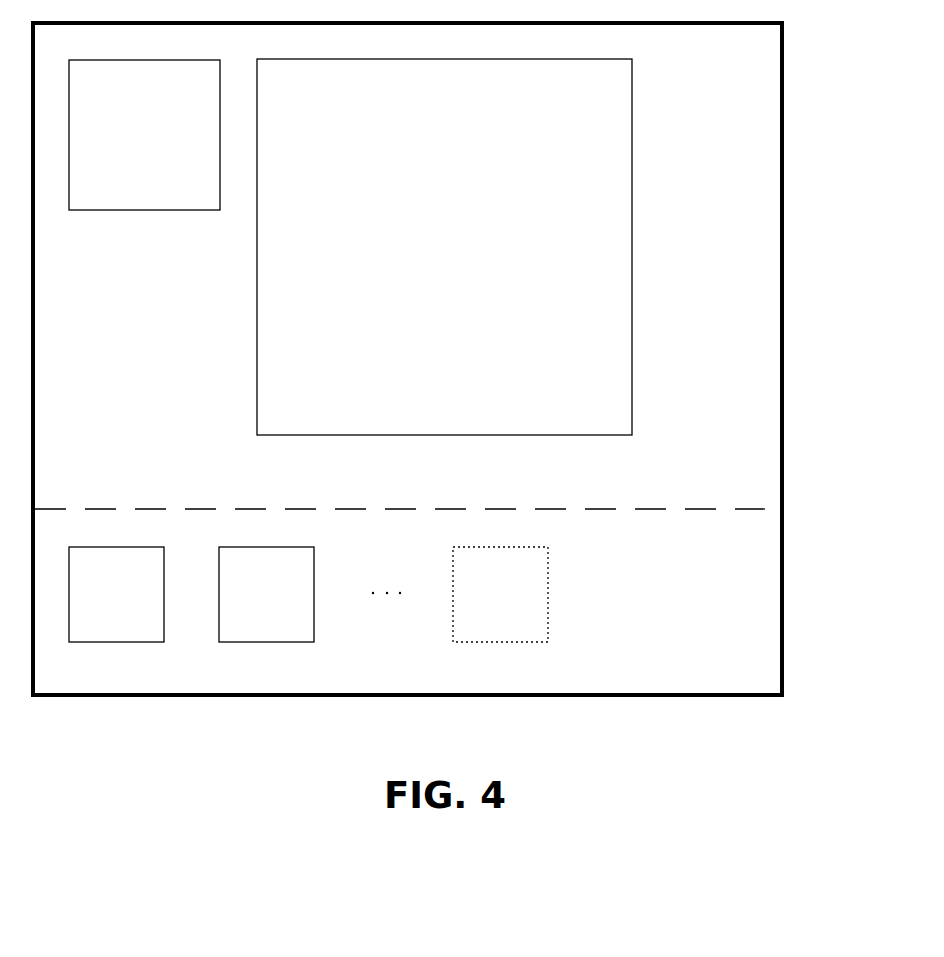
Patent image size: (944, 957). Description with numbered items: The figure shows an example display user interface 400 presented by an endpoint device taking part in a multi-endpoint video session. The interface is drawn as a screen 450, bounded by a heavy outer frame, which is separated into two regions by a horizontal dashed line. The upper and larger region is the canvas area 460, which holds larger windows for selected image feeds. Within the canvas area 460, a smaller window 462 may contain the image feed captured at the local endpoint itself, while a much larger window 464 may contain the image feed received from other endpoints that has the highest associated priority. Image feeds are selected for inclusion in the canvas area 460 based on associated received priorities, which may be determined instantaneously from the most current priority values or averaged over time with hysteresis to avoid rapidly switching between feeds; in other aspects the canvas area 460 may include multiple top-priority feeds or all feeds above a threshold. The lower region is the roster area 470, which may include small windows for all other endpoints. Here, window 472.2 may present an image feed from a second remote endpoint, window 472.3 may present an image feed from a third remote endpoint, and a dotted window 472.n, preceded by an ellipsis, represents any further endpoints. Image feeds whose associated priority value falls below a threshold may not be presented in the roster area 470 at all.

The system 400 is at (465, 838).
The screen 450 is at (784, 191).
The canvas area 460 is at (699, 473).
The window 462 is at (127, 143).
The window 464 is at (427, 256).
The roster area 470 is at (699, 586).
The window 472.2 is at (91, 603).
The window 472.3 is at (241, 603).
The window 472.n is at (474, 603).